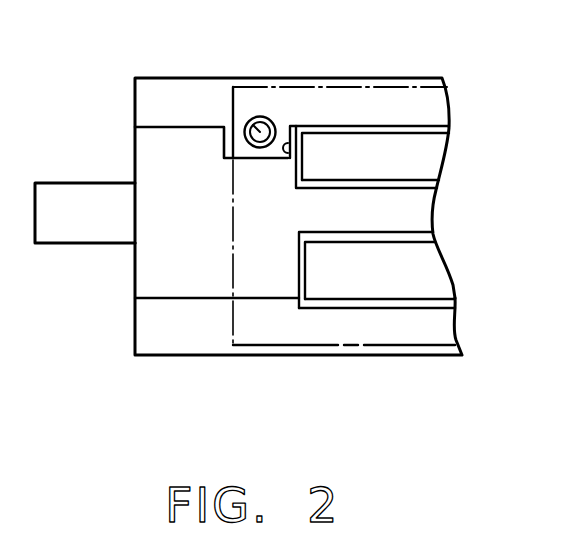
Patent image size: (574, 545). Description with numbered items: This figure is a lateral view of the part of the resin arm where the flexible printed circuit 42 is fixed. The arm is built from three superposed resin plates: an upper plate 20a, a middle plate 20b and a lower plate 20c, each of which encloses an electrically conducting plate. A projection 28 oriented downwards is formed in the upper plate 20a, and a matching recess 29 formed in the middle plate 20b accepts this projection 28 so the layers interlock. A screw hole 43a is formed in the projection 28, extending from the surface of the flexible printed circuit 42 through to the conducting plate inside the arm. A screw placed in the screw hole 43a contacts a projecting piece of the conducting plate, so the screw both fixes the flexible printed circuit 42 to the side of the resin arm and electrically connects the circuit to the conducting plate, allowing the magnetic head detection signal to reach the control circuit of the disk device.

The upper plate 20a is at (147, 98).
The middle plate 20b is at (131, 222).
The lower plate 20c is at (148, 333).
The projection 28 is at (222, 142).
The recess 29 is at (292, 158).
The screw hole 43a is at (251, 126).
The flexible printed circuit 42 is at (370, 347).